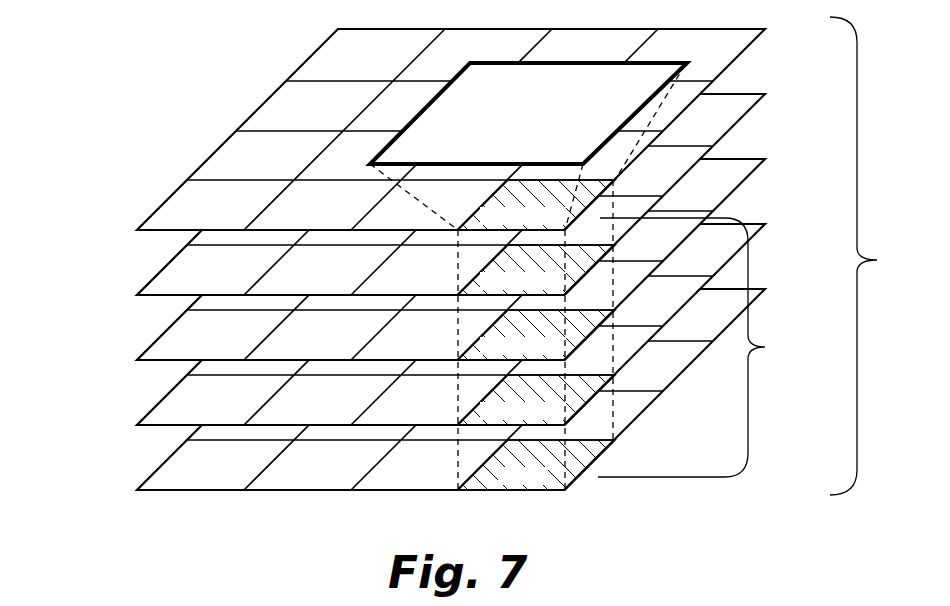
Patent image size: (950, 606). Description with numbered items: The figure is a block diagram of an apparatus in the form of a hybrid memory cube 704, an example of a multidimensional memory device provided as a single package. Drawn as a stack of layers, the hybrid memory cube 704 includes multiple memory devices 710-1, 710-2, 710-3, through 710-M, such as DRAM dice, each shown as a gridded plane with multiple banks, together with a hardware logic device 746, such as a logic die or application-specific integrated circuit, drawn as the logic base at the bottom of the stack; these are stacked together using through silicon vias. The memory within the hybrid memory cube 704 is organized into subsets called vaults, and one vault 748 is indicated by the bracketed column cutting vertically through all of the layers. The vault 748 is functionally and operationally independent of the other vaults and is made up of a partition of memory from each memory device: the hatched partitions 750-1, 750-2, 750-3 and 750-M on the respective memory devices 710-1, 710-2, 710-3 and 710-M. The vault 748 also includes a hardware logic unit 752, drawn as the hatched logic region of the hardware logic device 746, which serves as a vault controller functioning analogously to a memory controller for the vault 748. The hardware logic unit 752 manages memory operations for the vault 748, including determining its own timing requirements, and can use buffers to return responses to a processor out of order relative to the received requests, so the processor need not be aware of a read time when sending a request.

The hybrid memory cube 704 is at (873, 256).
The memory device 710-M is at (420, 130).
The memory device 710-3 is at (388, 253).
The memory device 710-2 is at (388, 300).
The memory device 710-1 is at (388, 347).
The hardware logic device 746 is at (386, 404).
The vault 748 is at (793, 365).
The partition 750-M is at (593, 206).
The partition 750-3 is at (577, 283).
The partition 750-2 is at (580, 347).
The partition 750-1 is at (578, 412).
The hardware logic unit 752 is at (575, 480).